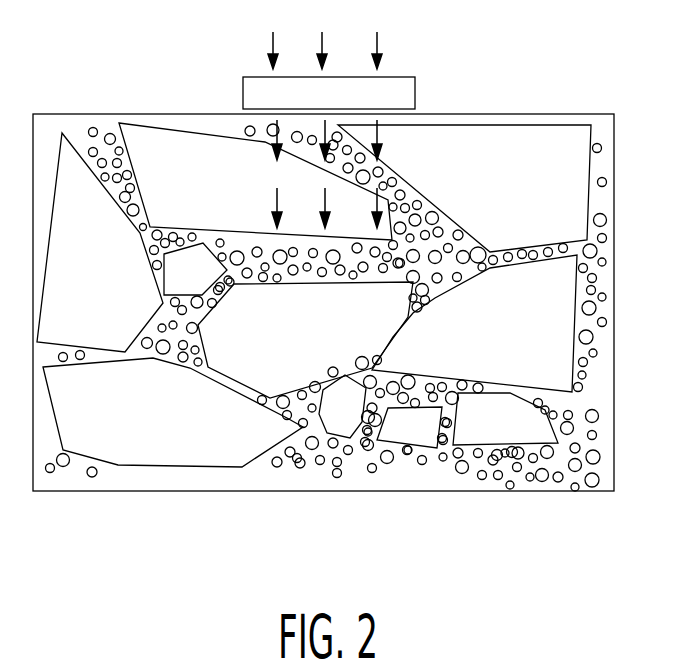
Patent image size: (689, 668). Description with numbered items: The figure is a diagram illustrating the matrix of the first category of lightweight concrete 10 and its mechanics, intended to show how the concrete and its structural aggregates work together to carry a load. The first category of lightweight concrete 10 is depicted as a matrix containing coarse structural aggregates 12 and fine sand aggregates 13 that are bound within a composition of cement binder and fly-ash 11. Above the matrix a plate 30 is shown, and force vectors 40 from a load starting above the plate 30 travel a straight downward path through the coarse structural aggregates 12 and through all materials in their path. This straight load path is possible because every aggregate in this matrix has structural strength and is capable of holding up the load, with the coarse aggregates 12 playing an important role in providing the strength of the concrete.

The first category of lightweight concrete 10 is at (358, 495).
The composition of cement binder and fly-ash 11 is at (277, 480).
The coarse structural aggregates 12 is at (150, 452).
The fine sand aggregates 13 is at (465, 472).
The plate 30 is at (415, 93).
The force vectors 40 is at (377, 33).